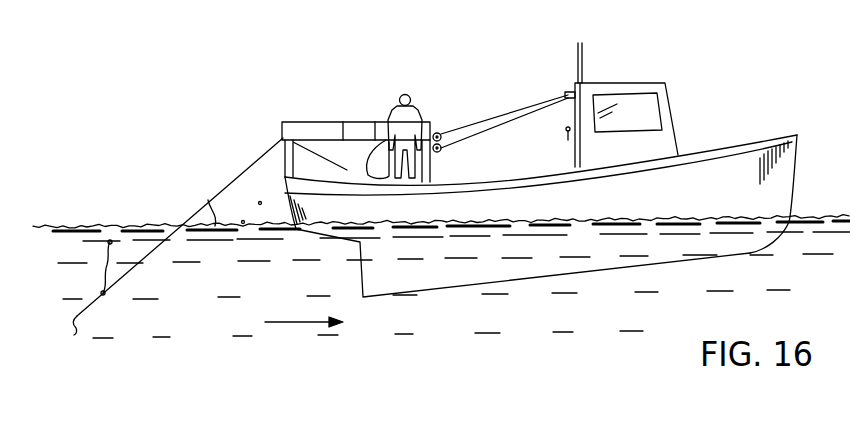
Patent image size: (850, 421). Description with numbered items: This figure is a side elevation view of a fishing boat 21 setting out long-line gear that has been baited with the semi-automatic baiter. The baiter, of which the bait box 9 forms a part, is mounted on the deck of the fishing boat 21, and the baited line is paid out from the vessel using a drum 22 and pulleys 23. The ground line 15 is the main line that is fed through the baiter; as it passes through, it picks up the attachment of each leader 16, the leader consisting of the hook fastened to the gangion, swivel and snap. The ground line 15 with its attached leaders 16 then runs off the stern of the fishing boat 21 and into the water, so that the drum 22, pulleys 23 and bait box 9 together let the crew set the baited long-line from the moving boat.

The bait box 9 is at (348, 122).
The ground line 15 is at (218, 189).
The leader 16 is at (259, 200).
The fishing boat 21 is at (722, 204).
The drum 22 is at (377, 157).
The pulleys 23 is at (572, 95).